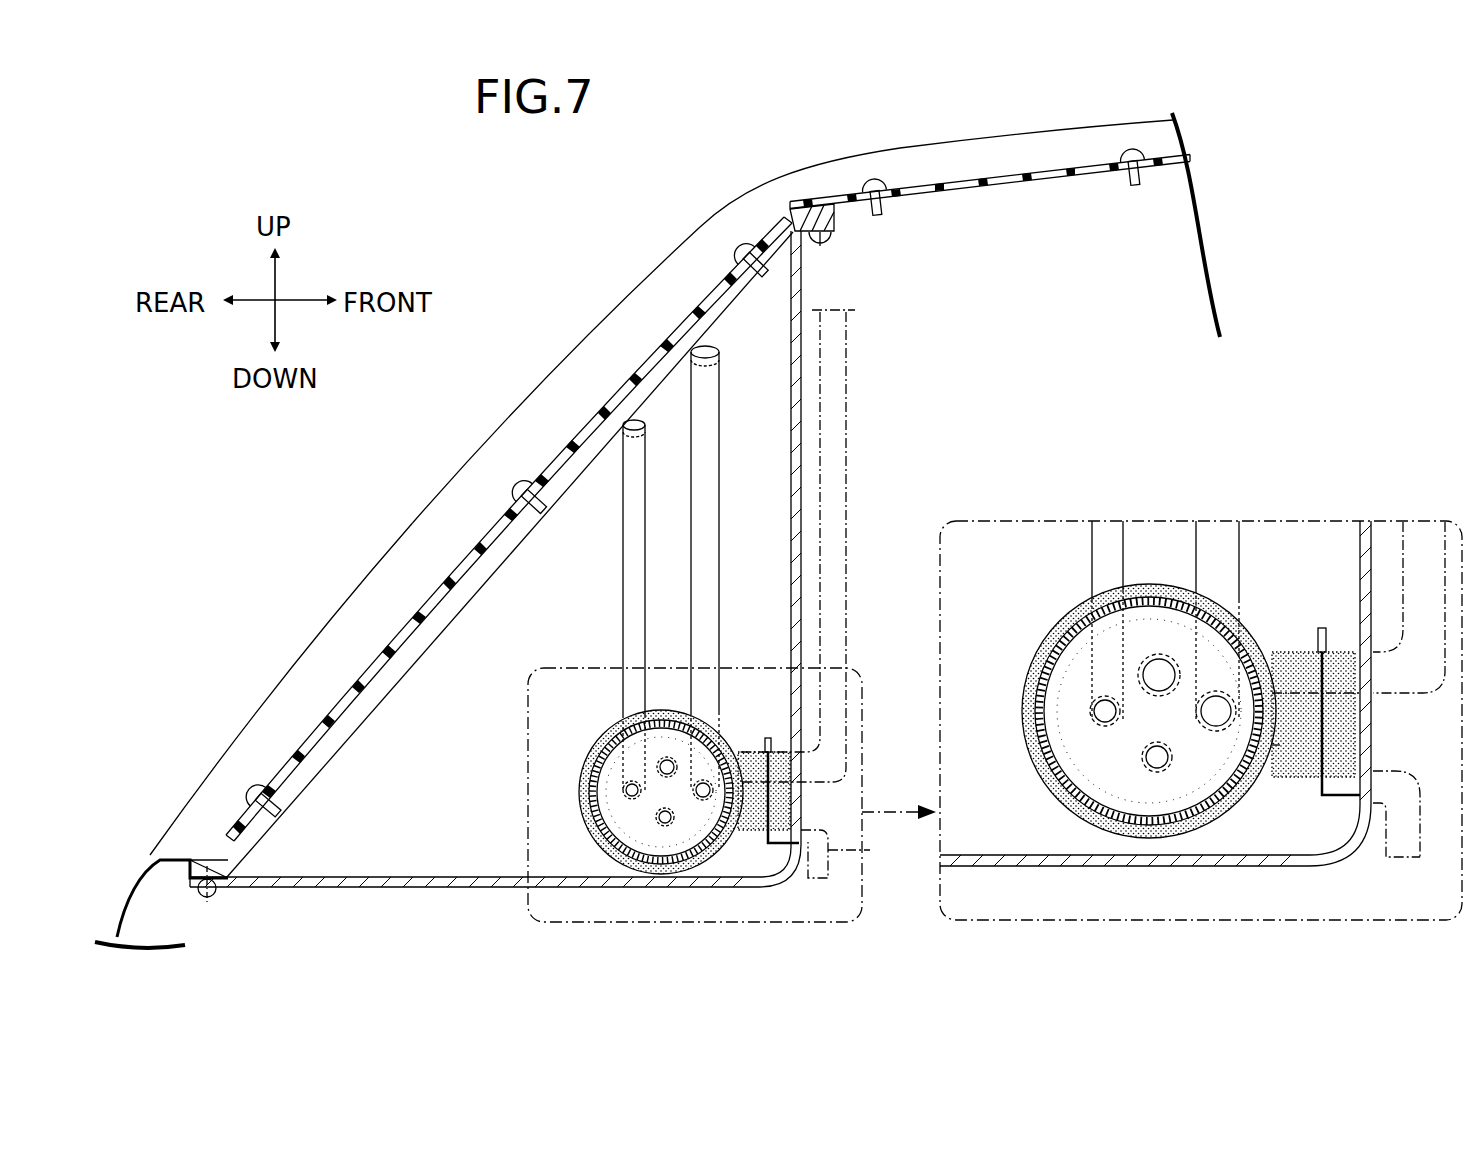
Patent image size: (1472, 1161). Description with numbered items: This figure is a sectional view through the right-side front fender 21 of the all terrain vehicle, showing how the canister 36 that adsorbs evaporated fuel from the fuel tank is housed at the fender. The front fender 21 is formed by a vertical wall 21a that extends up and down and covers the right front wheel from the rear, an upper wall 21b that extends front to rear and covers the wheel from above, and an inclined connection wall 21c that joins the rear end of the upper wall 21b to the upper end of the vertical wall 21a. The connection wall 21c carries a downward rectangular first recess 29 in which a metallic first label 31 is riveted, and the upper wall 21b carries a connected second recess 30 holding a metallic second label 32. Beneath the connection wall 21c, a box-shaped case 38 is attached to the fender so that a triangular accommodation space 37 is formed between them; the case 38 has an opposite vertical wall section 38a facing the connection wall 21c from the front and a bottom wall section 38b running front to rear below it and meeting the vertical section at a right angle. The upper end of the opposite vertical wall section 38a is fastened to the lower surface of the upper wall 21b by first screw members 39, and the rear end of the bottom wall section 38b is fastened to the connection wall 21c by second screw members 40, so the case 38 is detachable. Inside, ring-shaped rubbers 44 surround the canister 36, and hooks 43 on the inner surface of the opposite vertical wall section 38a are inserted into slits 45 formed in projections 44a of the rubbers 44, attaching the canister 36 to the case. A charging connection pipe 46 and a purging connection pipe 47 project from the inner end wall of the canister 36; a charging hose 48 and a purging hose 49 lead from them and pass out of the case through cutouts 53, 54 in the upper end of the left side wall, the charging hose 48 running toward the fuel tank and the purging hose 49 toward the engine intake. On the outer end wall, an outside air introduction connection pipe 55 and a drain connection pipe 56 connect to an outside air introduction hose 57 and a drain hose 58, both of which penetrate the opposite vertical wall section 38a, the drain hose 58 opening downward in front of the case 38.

The front fender 21 is at (337, 602).
The vertical wall 21a is at (130, 890).
The upper wall 21b is at (1042, 128).
The connection wall 21c is at (487, 443).
The first recess 29 is at (237, 757).
The second recess 30 is at (975, 150).
The first label 31 is at (446, 580).
The second label 32 is at (915, 190).
The canister 36 is at (600, 738).
The accommodation space 37 is at (410, 824).
The case 38 is at (475, 886).
The opposite vertical wall section 38a is at (803, 562).
The bottom wall section 38b is at (415, 888).
The first screw members 39 is at (834, 240).
The second screw members 40 is at (213, 896).
The hooks 43 is at (767, 738).
The rubbers 44 is at (581, 790).
The projections 44a is at (1296, 768).
The slits 45 is at (765, 850).
The charging connection pipe 46 is at (625, 796).
The purging connection pipe 47 is at (705, 800).
The charging hose 48 is at (622, 556).
The purging hose 49 is at (720, 496).
The cutout 53 is at (607, 440).
The cutout 54 is at (672, 350).
The outside air introduction connection pipe 55 is at (668, 757).
The drain connection pipe 56 is at (662, 824).
The outside air introduction hose 57 is at (850, 625).
The drain hose 58 is at (1442, 868).